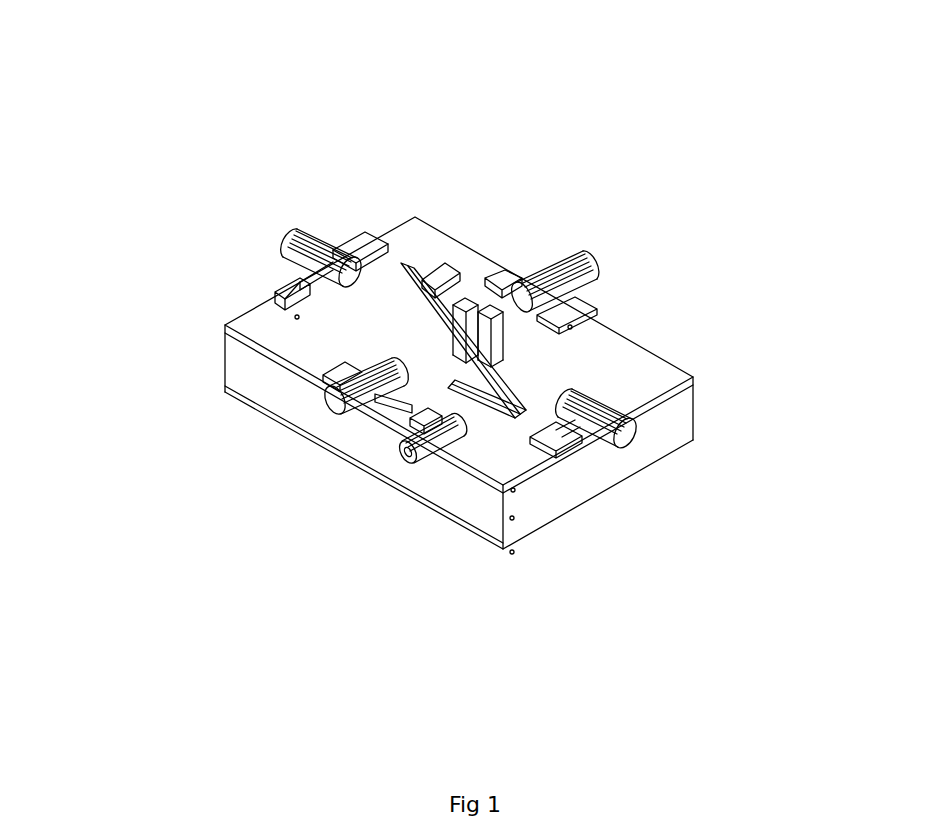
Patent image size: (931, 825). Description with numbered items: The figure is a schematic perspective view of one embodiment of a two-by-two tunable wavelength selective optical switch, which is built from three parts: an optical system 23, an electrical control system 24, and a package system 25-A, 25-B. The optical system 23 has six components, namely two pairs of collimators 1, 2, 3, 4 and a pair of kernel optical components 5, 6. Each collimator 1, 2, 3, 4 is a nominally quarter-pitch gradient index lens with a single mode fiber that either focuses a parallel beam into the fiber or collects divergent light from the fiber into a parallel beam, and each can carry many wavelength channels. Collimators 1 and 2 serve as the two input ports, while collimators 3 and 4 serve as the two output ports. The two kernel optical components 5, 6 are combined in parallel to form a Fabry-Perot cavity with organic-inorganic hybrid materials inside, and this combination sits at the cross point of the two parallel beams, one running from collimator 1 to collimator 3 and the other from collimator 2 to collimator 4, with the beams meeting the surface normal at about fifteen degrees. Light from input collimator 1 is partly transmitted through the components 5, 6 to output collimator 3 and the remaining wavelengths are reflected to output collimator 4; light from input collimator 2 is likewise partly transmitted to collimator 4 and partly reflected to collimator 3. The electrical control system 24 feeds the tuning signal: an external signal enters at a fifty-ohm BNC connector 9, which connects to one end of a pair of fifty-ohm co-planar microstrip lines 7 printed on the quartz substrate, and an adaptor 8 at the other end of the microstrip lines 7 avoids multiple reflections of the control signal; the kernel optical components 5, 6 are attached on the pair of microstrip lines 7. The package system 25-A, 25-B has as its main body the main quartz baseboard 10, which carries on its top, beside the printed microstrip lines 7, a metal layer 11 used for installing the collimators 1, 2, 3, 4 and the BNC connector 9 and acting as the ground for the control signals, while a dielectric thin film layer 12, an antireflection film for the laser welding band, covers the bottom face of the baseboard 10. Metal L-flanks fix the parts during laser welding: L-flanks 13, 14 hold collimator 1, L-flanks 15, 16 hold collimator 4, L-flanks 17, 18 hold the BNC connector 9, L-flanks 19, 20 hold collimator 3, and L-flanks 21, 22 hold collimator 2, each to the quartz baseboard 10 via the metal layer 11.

The collimator 1 is at (483, 265).
The collimator 2 is at (567, 388).
The collimator 3 is at (588, 262).
The collimator 4 is at (368, 226).
The kernel optical component 5 is at (467, 304).
The kernel optical component 6 is at (492, 312).
The co-planar microstrip lines 7 is at (297, 317).
The adaptor 8 is at (368, 228).
The BNC connector 9 is at (330, 393).
The main quartz baseboard 10 is at (512, 518).
The metal layer 11 is at (513, 490).
The dielectric thin film layer 12 is at (512, 552).
The metal L-flank 13 is at (430, 300).
The metal L-flank 14 is at (462, 338).
The metal L-flank 15 is at (297, 317).
The metal L-flank 16 is at (352, 352).
The metal L-flank 17 is at (497, 388).
The metal L-flank 18 is at (513, 405).
The metal L-flank 19 is at (570, 327).
The metal L-flank 20 is at (632, 405).
The metal L-flank 21 is at (633, 417).
The metal L-flank 22 is at (560, 455).
The optical system 23 is at (712, 3).
The electrical control system 24 is at (128, 110).
The package system 25-A is at (127, 445).
The package system 25-B is at (785, 376).